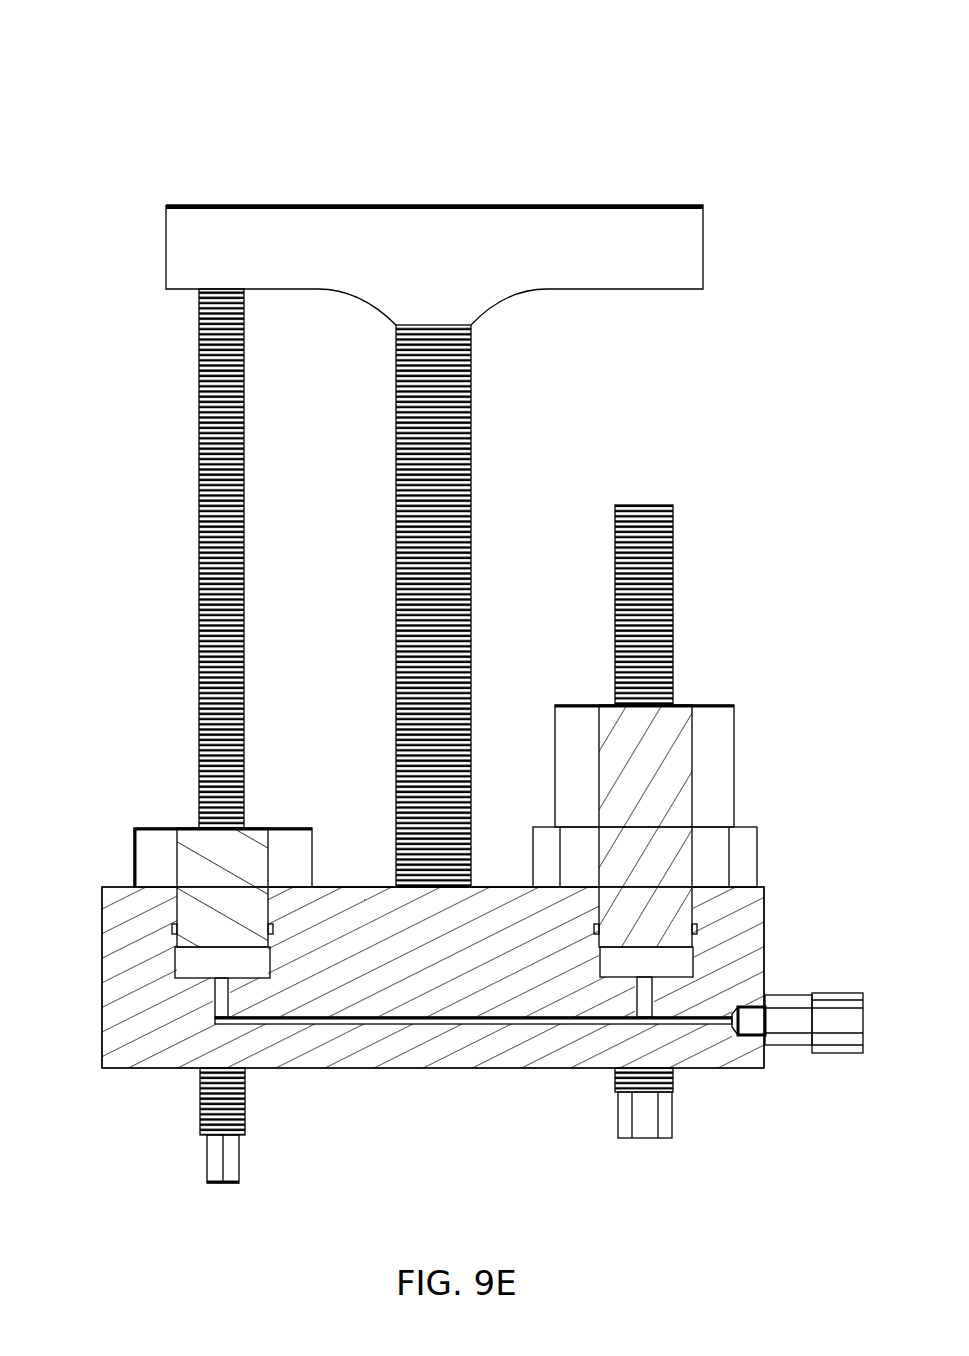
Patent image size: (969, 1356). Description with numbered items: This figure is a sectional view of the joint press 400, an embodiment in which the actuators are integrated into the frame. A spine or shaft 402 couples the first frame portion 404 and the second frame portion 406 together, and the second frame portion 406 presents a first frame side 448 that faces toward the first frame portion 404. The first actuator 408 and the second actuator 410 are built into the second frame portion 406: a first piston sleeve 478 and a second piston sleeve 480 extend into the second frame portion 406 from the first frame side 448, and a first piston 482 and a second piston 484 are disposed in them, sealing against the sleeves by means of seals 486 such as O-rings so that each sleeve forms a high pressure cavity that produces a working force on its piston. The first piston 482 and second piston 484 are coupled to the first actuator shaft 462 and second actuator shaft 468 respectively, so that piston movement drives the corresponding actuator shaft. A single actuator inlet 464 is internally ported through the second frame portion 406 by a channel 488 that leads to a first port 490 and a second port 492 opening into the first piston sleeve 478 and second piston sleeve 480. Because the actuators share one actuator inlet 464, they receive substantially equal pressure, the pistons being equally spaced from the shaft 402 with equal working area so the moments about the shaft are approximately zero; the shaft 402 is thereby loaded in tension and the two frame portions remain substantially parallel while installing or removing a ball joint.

The joint press 400 is at (388, 108).
The shaft 402 is at (471, 408).
The first frame portion 404 is at (500, 205).
The second frame portion 406 is at (507, 1068).
The first actuator 408 is at (772, 812).
The second actuator 410 is at (125, 868).
The first frame side 448 is at (348, 887).
The first actuator shaft 462 is at (673, 566).
The actuator inlet 464 is at (858, 1022).
The second actuator shaft 468 is at (199, 430).
The first piston sleeve 478 is at (685, 965).
The second piston sleeve 480 is at (187, 965).
The first piston 482 is at (734, 738).
The second piston 484 is at (134, 835).
The seals 486 is at (177, 928).
The channel 488 is at (485, 1025).
The first port 490 is at (660, 998).
The second port 492 is at (213, 985).